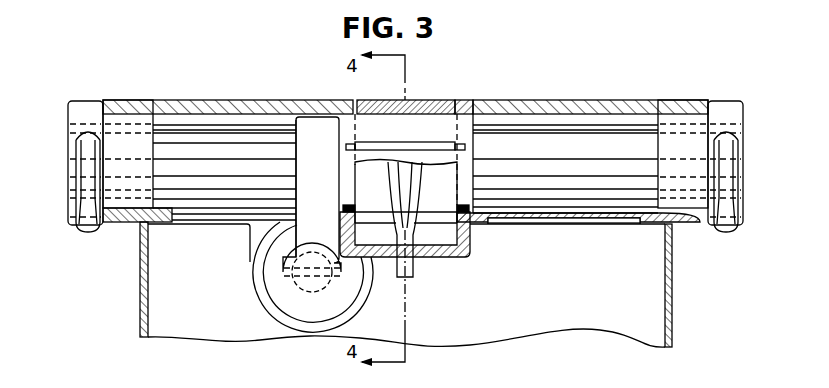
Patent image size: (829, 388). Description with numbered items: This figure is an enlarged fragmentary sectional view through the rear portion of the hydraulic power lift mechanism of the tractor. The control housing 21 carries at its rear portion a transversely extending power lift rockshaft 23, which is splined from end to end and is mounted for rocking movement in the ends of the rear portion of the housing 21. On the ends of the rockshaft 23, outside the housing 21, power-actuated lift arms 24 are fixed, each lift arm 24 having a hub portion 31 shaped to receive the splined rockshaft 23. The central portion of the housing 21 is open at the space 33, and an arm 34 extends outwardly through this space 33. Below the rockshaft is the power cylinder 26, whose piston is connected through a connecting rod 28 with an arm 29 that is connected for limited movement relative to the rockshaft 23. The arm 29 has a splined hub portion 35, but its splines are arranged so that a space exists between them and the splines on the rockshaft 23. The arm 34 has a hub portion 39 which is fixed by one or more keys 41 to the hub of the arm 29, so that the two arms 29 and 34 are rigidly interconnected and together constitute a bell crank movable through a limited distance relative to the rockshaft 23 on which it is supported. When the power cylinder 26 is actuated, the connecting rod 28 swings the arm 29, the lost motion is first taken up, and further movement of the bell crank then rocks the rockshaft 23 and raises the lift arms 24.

The control housing 21 is at (212, 103).
The power lift rockshaft 23 is at (562, 185).
The lift arm 24 is at (80, 170).
The power cylinder 26 is at (262, 283).
The connecting rod 28 is at (295, 289).
The arm 29 is at (305, 228).
The hub portion 31 is at (127, 121).
The open central portion 33 is at (360, 106).
The arm 34 is at (407, 280).
The hub portion 35 is at (465, 124).
The hub portion 39 is at (428, 103).
The key 41 is at (397, 145).